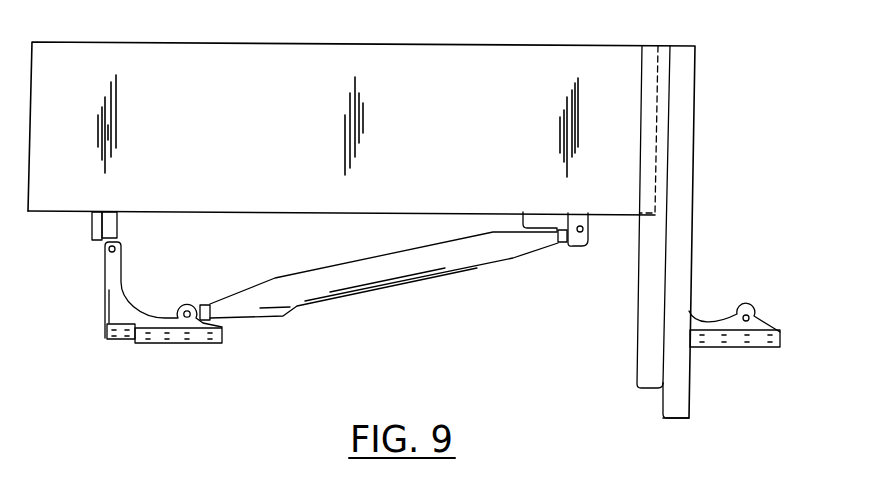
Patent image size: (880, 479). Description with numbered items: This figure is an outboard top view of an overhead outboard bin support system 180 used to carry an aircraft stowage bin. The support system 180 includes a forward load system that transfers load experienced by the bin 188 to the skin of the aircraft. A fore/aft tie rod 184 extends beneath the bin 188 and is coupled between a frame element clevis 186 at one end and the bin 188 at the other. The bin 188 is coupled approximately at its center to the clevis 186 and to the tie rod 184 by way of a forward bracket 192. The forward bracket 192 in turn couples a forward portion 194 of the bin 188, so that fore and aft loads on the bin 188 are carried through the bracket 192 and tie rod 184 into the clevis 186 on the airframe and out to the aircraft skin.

The overhead outboard bin support system 180 is at (156, 355).
The fore/aft tie rod 184 is at (340, 299).
The frame element clevis 186 is at (183, 344).
The bin 188 is at (318, 213).
The forward bracket 192 is at (577, 252).
The forward portion 194 is at (608, 236).